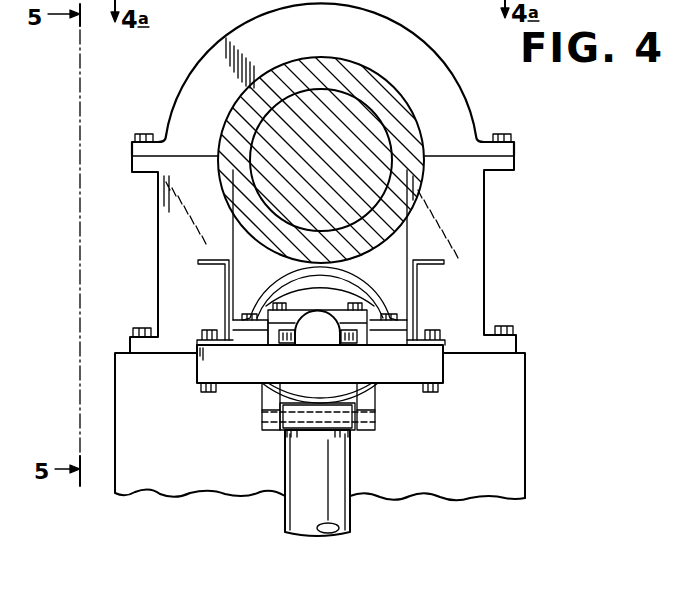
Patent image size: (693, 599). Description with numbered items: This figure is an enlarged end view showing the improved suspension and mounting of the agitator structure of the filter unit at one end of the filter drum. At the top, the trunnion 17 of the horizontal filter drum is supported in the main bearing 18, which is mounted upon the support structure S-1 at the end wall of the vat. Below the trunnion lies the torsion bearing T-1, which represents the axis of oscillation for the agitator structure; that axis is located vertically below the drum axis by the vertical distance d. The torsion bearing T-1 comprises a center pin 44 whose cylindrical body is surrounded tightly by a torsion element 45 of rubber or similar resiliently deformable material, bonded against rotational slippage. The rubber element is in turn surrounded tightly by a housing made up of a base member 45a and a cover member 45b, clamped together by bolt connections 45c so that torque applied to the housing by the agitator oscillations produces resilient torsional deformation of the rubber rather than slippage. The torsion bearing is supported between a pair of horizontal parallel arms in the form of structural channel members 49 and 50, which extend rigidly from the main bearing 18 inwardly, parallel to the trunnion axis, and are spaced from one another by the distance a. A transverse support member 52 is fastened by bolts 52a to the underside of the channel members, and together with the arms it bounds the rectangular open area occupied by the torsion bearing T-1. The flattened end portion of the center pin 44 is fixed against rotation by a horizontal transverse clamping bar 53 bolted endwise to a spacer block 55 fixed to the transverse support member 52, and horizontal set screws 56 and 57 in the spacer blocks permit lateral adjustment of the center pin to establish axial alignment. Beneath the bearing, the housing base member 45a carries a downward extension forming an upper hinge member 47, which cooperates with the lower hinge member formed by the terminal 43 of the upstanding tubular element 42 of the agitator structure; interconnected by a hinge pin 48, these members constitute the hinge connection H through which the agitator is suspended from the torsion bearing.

The trunnion 17 is at (372, 90).
The main bearing 18 is at (436, 56).
The upstanding tubular element 42 is at (333, 487).
The terminal (lower hinge member) 43 is at (302, 418).
The center pin 44 is at (318, 330).
The torsion element 45 is at (295, 310).
The housing base member 45a is at (280, 393).
The housing cover member 45b is at (367, 287).
The bolt connections 45c is at (395, 317).
The upper hinge member 47 is at (372, 408).
The hinge pin 48 is at (376, 419).
The channel member 49 is at (221, 276).
The channel member 50 is at (418, 283).
The transverse support member 52 is at (437, 369).
The bolts 52a is at (433, 393).
The clamping bar 53 is at (300, 297).
The spacer block 55 is at (340, 346).
The set screw 56 is at (283, 346).
The set screw 57 is at (348, 346).
The support structure S-1 is at (517, 417).
The torsion bearing T-1 is at (352, 262).
The hinge connection H is at (364, 439).
The distance a is at (395, 182).
The vertical distance d is at (514, 156).